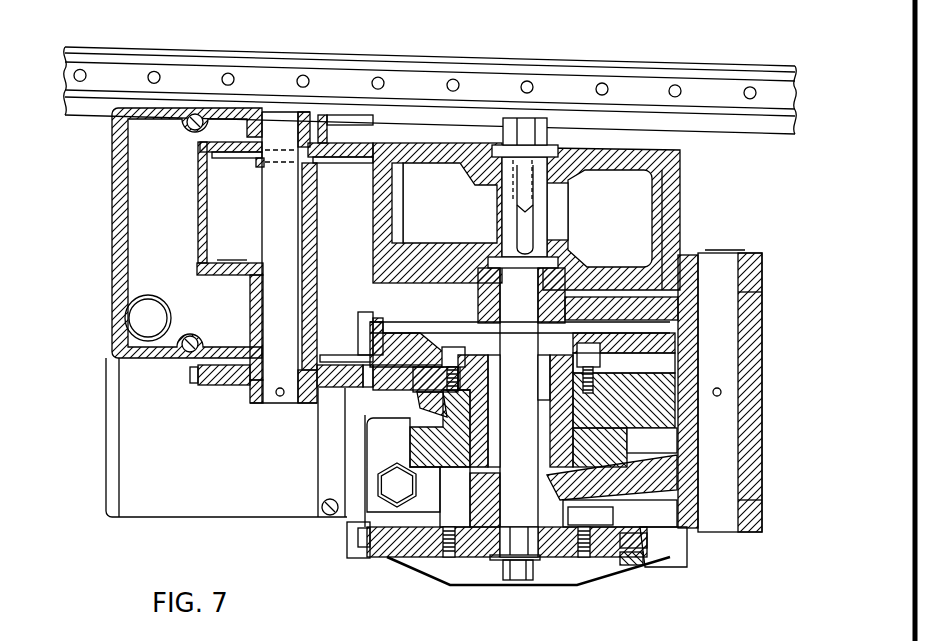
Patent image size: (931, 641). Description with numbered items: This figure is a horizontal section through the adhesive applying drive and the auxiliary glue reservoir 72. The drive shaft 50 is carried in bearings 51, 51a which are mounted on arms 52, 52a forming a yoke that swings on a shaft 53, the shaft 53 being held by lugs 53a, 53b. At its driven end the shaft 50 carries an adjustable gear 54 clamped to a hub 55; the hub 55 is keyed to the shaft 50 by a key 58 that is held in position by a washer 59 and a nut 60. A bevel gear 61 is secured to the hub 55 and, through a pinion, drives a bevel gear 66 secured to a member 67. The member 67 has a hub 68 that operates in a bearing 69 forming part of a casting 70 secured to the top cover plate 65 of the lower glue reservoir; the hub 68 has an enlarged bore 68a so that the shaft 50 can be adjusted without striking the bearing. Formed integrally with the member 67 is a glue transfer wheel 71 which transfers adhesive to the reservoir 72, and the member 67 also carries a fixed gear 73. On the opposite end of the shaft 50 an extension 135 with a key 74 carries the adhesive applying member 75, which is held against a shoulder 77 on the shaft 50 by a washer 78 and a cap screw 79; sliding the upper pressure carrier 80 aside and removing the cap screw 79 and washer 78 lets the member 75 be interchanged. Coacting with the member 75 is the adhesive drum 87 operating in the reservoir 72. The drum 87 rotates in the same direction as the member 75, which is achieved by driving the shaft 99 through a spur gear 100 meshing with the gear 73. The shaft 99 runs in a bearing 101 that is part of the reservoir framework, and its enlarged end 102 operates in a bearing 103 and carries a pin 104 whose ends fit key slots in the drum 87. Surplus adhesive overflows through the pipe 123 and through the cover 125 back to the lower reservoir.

The shaft 50 is at (515, 315).
The bearing 51 is at (495, 297).
The bearing 51a is at (490, 497).
The arm 52 is at (648, 300).
The arm 52a is at (648, 477).
The shaft 53 is at (727, 375).
The lug 53a is at (753, 272).
The lug 53b is at (748, 508).
The adjustable gear 54 is at (370, 562).
The hub 55 is at (562, 560).
The key 58 is at (515, 545).
The washer 59 is at (532, 560).
The nut 60 is at (513, 580).
The bevel gear 61 is at (418, 560).
The top cover plate 65 is at (353, 488).
The bevel gear 66 is at (420, 407).
The member 67 is at (422, 340).
The hub 68 is at (488, 398).
The enlarged bore 68a is at (493, 372).
The bearing 69 is at (467, 418).
The casting 70 is at (368, 453).
The glue transfer wheel 71 is at (373, 328).
The reservoir 72 is at (345, 118).
The fixed gear 73 is at (654, 393).
The key 74 is at (525, 240).
The adhesive applying member 75 is at (443, 157).
The shoulder 77 is at (555, 262).
The washer 78 is at (552, 145).
The cap screw 79 is at (522, 128).
The upper pressure carrier 80 is at (650, 86).
The adhesive drum 87 is at (198, 208).
The shaft 99 is at (273, 393).
The spur gear 100 is at (212, 378).
The bearing 101 is at (260, 307).
The enlarged end 102 is at (300, 128).
The bearing 103 is at (263, 123).
The pin 104 is at (260, 168).
The pipe 123 is at (127, 335).
The cover 125 is at (237, 510).
The extension 135 is at (542, 210).